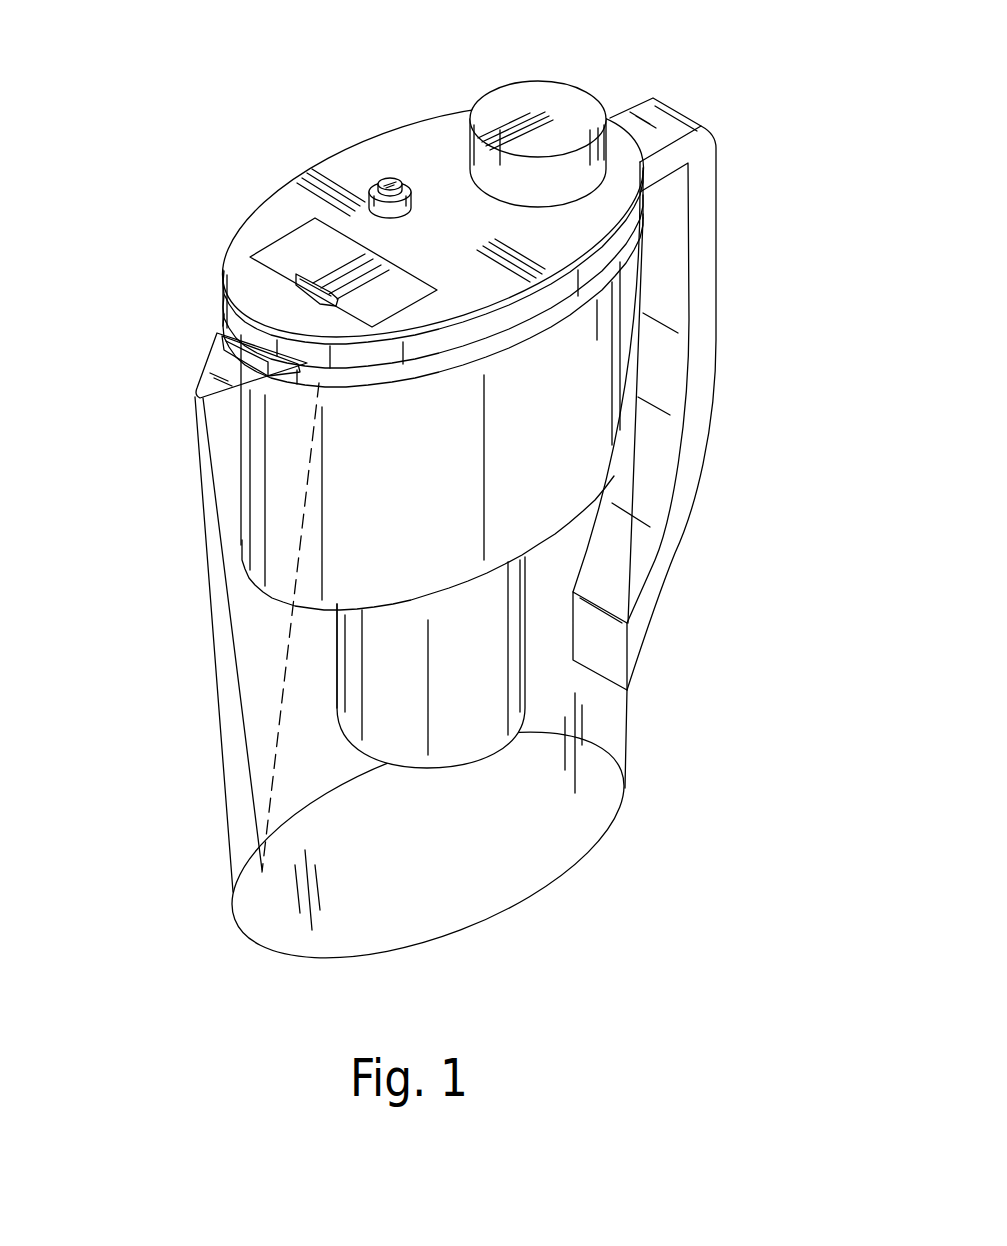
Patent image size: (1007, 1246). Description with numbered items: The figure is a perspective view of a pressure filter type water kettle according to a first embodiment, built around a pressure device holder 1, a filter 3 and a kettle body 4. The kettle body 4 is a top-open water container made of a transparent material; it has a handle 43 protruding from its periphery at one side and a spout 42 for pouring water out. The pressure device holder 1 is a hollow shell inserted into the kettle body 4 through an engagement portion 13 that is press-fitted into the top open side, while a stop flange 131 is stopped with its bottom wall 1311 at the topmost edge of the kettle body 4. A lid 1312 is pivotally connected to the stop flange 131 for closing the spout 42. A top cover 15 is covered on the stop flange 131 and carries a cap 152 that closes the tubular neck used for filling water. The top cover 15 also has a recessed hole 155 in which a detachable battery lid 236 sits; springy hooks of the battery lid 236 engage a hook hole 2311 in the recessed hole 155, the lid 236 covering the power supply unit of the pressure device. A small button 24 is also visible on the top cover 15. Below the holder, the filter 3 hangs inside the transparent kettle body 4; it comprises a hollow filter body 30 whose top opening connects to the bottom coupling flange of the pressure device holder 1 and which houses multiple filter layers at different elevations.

The pressure device holder 1 is at (230, 492).
The engagement portion 13 is at (507, 340).
The stop flange 131 is at (363, 362).
The bottom wall 1311 is at (640, 213).
The lid 1312 is at (197, 373).
The top cover 15 is at (583, 250).
The cap 152 is at (612, 128).
The recessed hole 155 is at (383, 260).
The button 24 is at (403, 192).
The detachable battery lid 236 is at (291, 241).
The hook hole 2311 is at (283, 290).
The filter 3 is at (330, 693).
The hollow filter body 30 is at (337, 650).
The kettle body 4 is at (213, 813).
The spout 42 is at (213, 517).
The handle 43 is at (675, 553).